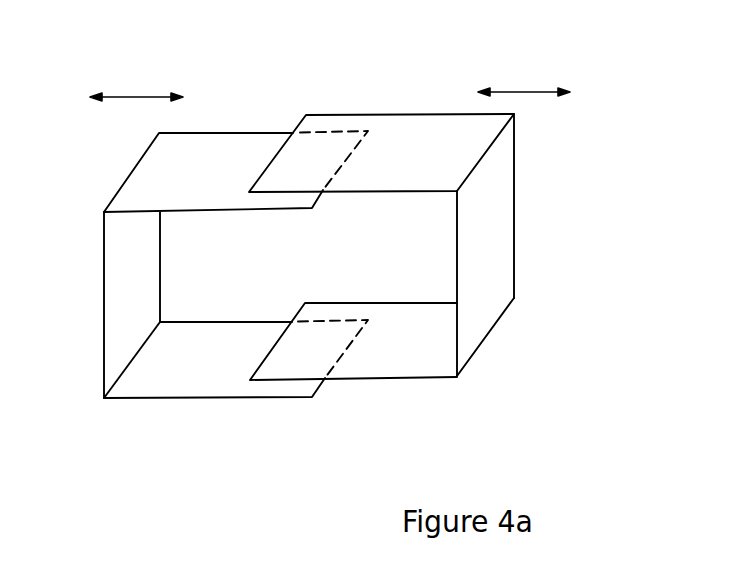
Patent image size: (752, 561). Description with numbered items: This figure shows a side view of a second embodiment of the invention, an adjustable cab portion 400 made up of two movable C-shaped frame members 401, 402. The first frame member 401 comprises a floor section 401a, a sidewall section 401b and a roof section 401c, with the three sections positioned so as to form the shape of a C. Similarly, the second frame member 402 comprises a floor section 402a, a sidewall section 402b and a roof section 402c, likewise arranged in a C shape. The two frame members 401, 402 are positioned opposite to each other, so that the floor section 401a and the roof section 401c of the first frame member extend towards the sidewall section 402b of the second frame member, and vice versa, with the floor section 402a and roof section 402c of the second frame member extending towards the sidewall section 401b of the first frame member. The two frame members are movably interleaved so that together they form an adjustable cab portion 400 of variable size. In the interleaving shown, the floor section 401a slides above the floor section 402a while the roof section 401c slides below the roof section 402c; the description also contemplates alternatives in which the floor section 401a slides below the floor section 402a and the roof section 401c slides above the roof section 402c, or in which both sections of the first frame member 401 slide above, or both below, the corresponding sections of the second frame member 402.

The adjustable cab portion 400 is at (692, 0).
The first frame member 401 is at (101, 335).
The floor section 401a is at (185, 385).
The sidewall section 401b is at (112, 278).
The roof section 401c is at (205, 150).
The second frame member 402 is at (519, 300).
The floor section 402a is at (410, 365).
The sidewall section 402b is at (490, 238).
The roof section 402c is at (430, 130).